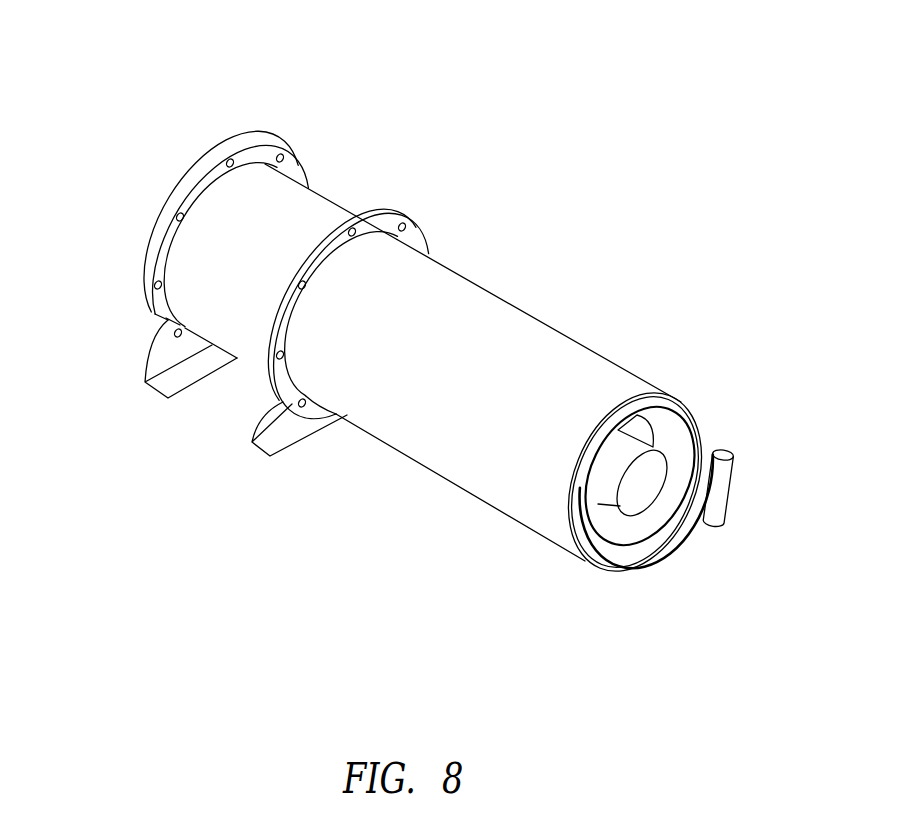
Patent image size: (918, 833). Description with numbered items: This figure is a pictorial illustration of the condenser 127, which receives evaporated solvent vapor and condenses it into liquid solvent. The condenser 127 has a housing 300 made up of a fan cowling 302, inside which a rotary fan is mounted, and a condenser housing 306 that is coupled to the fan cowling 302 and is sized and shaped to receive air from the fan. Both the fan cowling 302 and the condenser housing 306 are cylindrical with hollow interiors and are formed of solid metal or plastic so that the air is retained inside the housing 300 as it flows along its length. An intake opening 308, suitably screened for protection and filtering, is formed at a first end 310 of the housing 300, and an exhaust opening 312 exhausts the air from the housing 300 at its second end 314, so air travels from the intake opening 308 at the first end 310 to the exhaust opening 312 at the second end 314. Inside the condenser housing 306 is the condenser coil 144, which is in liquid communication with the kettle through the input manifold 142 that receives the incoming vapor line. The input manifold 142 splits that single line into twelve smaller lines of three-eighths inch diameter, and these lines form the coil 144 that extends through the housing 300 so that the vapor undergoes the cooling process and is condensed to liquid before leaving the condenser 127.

The condenser 127 is at (421, 332).
The housing 300 is at (185, 186).
The fan cowling 302 is at (324, 186).
The condenser housing 306 is at (496, 290).
The intake opening 308 is at (714, 427).
The first end 310 is at (615, 562).
The exhaust opening 312 is at (177, 187).
The second end 314 is at (167, 223).
The input manifold 142 is at (743, 485).
The condenser coil 144 is at (683, 540).